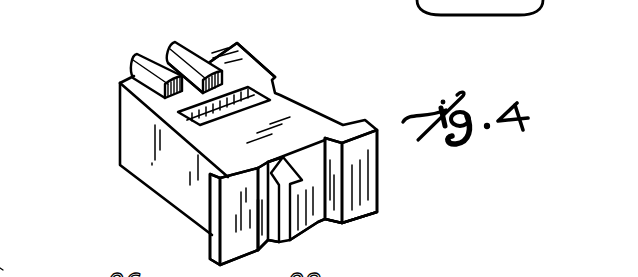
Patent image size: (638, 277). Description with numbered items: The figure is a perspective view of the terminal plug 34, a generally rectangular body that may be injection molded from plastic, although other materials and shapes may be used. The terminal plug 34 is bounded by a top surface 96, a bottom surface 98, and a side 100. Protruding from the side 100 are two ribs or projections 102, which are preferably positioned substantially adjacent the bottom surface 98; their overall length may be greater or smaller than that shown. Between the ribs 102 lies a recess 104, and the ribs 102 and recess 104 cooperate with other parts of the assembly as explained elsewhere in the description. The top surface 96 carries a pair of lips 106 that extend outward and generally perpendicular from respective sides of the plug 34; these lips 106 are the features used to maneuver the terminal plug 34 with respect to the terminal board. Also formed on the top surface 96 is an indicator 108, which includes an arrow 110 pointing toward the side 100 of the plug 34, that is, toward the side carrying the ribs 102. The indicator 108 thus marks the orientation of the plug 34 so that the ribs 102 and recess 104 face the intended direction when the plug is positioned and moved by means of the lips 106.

The terminal plug 34 is at (333, 95).
The top surface 96 is at (320, 225).
The bottom surface 98 is at (220, 44).
The side 100 is at (200, 129).
The ribs 102 is at (78, 80).
The recess 104 is at (168, 58).
The lips 106 is at (228, 207).
The indicator 108 is at (301, 237).
The arrow 110 is at (258, 237).